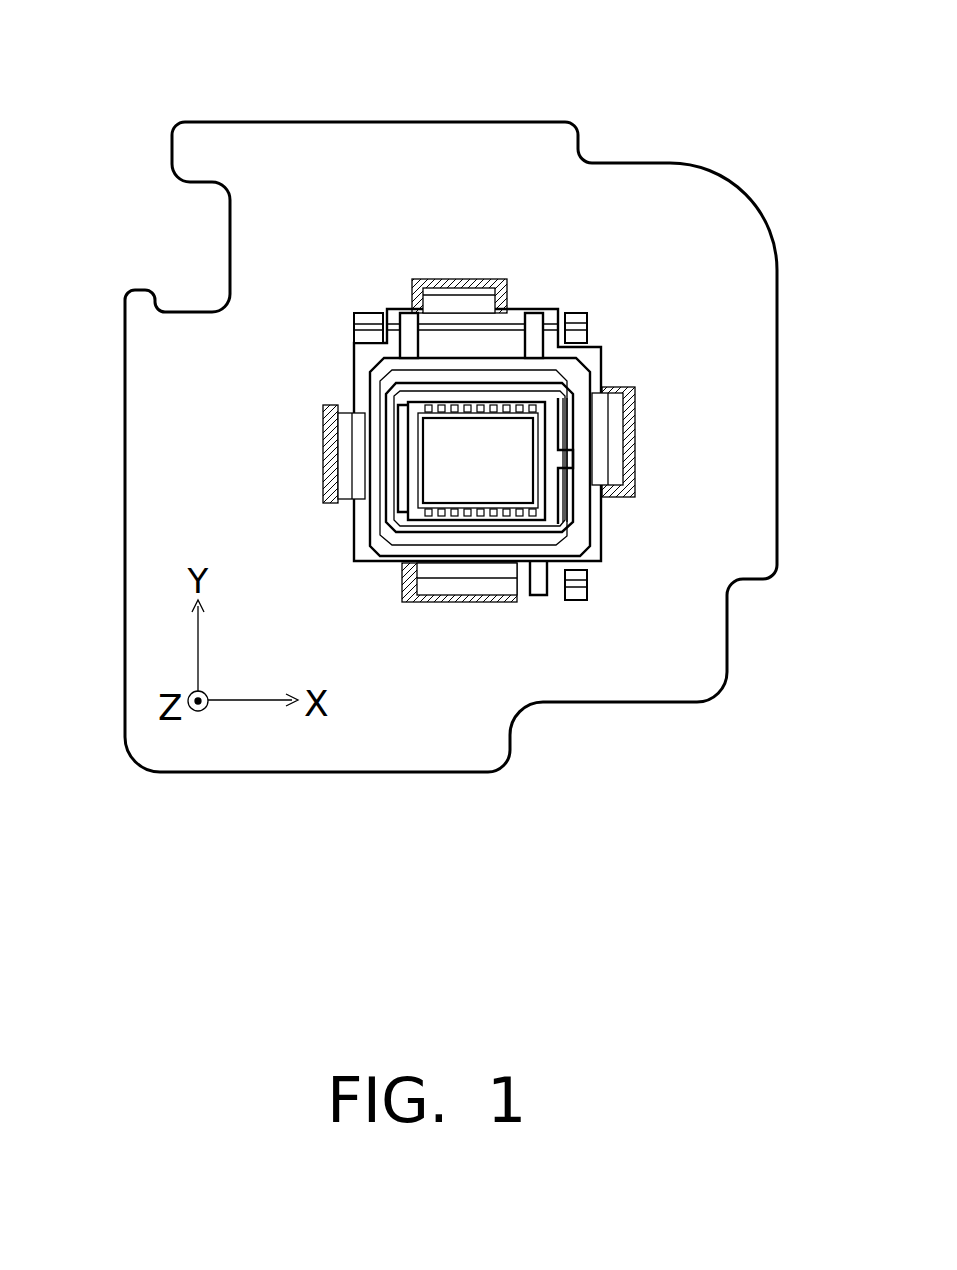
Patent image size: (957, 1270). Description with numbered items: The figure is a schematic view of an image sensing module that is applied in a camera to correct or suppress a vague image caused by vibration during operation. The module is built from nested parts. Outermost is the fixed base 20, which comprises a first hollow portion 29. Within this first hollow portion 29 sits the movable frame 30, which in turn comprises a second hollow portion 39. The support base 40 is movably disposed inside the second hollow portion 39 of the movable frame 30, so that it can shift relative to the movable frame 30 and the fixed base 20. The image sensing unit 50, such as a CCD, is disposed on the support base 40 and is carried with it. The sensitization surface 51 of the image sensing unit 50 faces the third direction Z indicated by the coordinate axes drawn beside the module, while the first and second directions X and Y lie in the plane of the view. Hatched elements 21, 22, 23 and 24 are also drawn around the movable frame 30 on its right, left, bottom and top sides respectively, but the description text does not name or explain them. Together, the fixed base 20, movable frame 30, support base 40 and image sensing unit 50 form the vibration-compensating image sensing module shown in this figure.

The fixed base 20 is at (762, 383).
The position sensor 21 is at (615, 437).
The magnet 22 is at (340, 452).
The magnet 23 is at (458, 590).
The magnet 24 is at (466, 300).
The first hollow portion 29 is at (600, 352).
The movable frame 30 is at (583, 476).
The second hollow portion 39 is at (400, 372).
The support base 40 is at (540, 516).
The image sensing unit 50 is at (545, 493).
The sensitization surface 51 is at (508, 433).